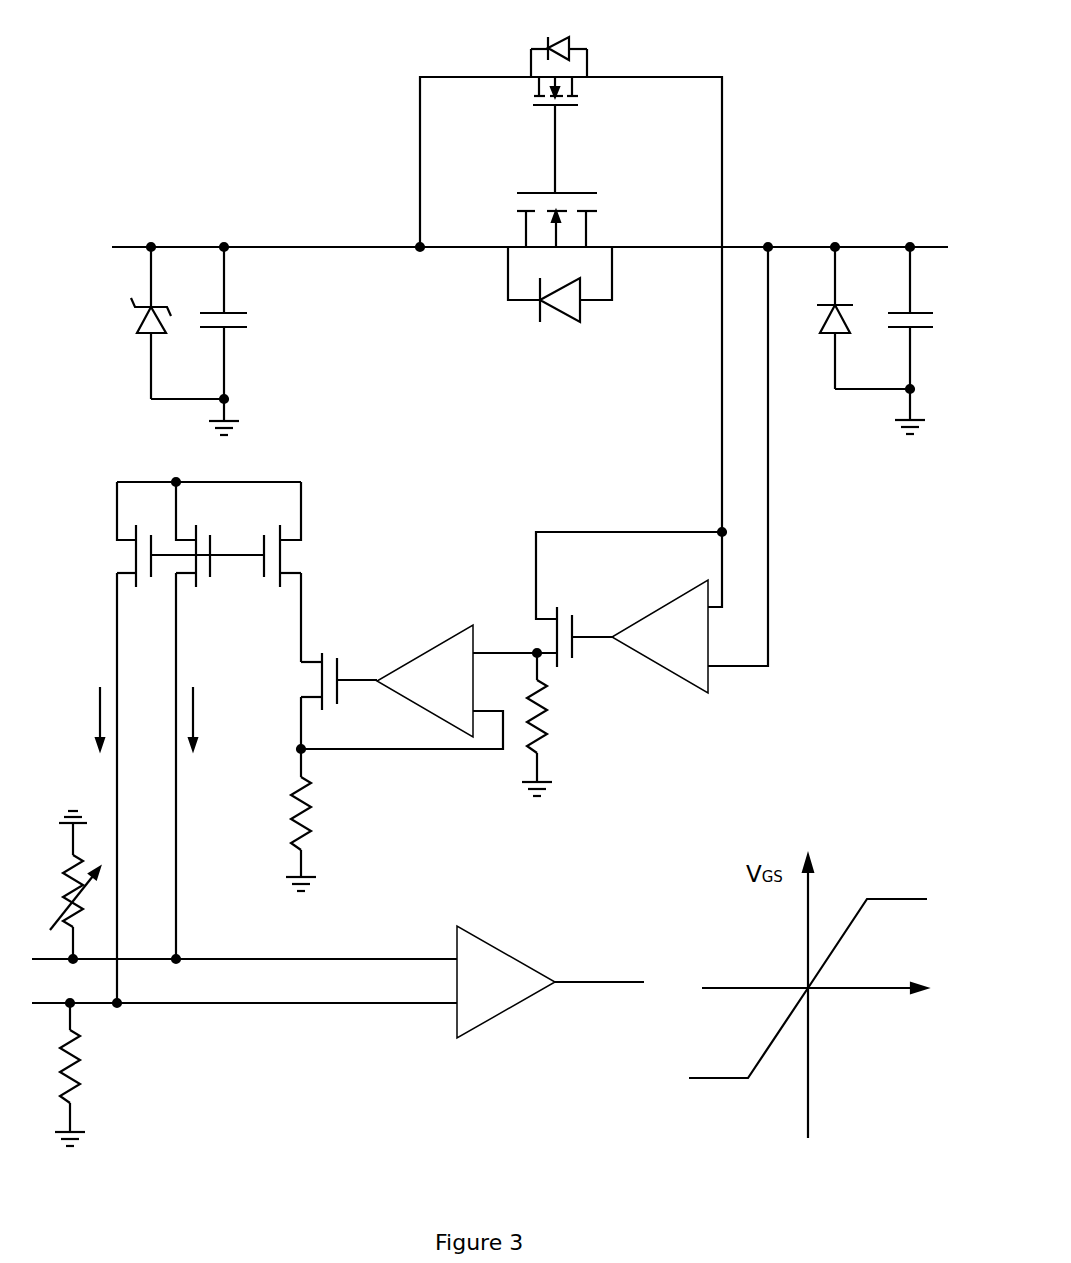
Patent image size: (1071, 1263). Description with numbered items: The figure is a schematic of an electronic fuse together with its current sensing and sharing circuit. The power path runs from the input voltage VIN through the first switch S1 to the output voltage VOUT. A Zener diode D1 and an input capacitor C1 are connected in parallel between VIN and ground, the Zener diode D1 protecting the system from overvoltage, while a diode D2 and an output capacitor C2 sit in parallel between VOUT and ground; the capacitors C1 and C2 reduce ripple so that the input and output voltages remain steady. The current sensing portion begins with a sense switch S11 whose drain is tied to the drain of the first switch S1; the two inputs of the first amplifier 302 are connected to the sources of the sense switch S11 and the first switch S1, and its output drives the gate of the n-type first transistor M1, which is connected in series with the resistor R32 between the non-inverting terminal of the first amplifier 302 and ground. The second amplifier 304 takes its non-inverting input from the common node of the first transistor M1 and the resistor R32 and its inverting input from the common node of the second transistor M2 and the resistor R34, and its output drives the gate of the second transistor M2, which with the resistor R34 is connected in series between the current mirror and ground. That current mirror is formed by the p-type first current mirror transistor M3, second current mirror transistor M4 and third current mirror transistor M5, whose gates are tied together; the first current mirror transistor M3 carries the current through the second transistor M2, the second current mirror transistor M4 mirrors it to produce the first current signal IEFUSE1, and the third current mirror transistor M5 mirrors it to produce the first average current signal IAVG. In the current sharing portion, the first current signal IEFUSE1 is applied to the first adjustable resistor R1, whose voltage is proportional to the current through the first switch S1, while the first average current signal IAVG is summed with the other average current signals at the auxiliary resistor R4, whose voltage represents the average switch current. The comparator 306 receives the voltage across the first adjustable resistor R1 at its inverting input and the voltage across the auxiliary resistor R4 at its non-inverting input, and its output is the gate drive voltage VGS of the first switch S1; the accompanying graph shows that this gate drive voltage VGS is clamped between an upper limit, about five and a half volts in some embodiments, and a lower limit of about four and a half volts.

The sense switch S11 is at (586, 115).
The first switch S1 is at (587, 257).
The Zener diode D1 is at (160, 323).
The input capacitor C1 is at (241, 341).
The diode D2 is at (847, 318).
The output capacitor C2 is at (897, 340).
The third current mirror transistor M5 is at (113, 742).
The second current mirror transistor M4 is at (200, 720).
The first current mirror transistor M3 is at (305, 572).
The second transistor M2 is at (321, 703).
The first transistor M1 is at (584, 625).
The resistor R34 is at (323, 820).
The resistor R32 is at (558, 724).
The first adjustable resistor R1 is at (64, 885).
The auxiliary resistor R4 is at (88, 1074).
The first amplifier 302 is at (653, 650).
The second amplifier 304 is at (418, 693).
The comparator 306 is at (485, 994).
The input voltage VIN is at (522, 232).
The output voltage VOUT is at (851, 232).
The first average current signal IAVG is at (79, 718).
The first current signal IEFUSE1 is at (226, 718).
The gate drive voltage VGS is at (599, 964).